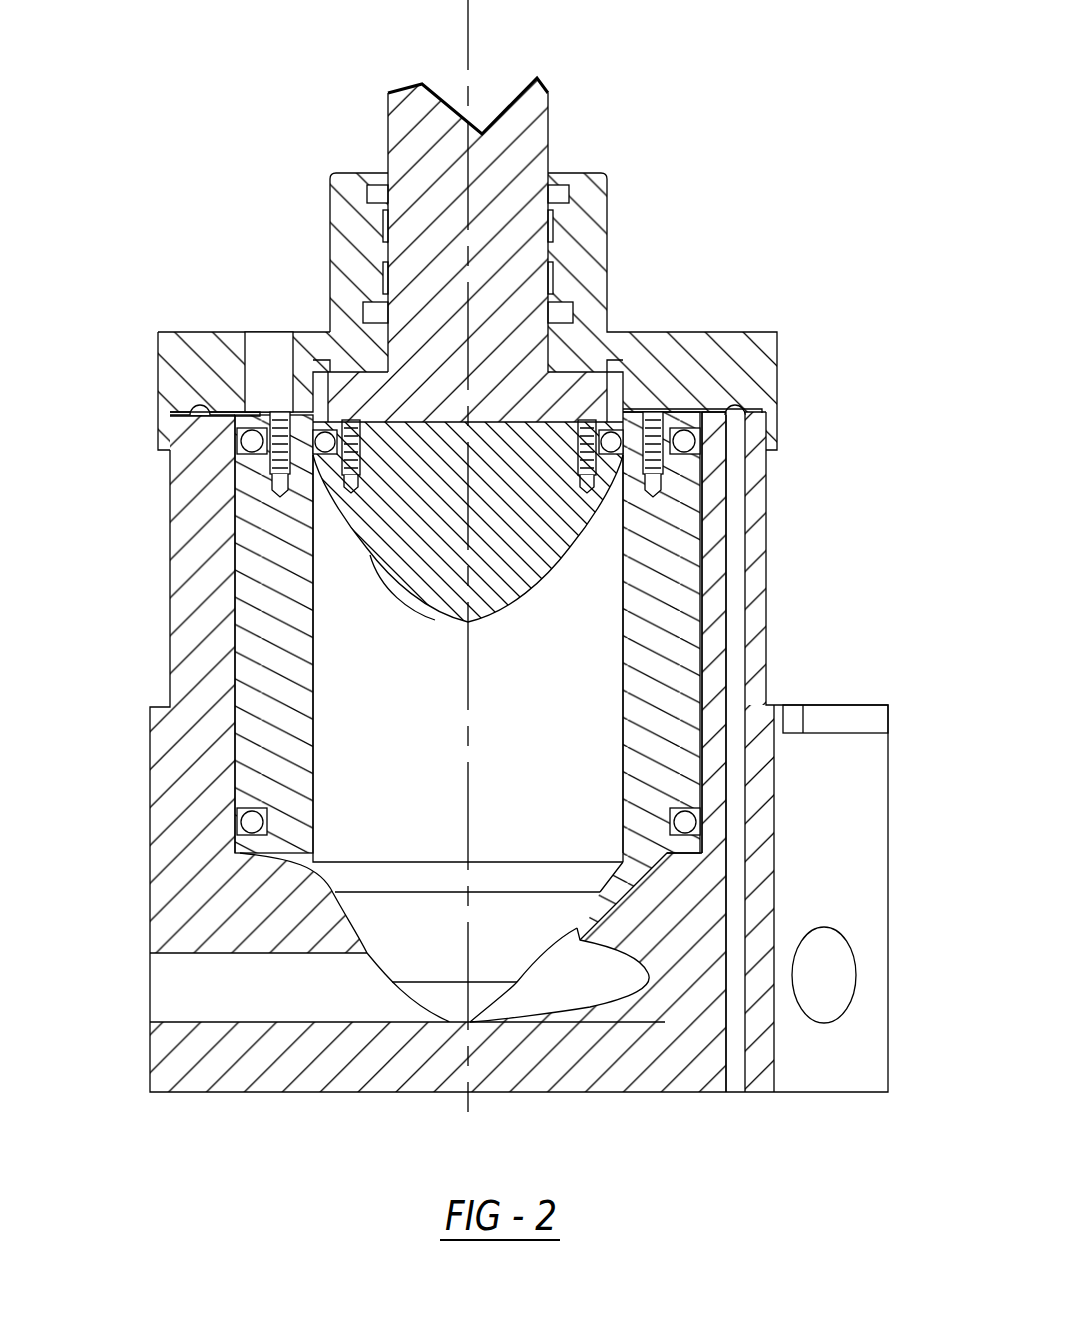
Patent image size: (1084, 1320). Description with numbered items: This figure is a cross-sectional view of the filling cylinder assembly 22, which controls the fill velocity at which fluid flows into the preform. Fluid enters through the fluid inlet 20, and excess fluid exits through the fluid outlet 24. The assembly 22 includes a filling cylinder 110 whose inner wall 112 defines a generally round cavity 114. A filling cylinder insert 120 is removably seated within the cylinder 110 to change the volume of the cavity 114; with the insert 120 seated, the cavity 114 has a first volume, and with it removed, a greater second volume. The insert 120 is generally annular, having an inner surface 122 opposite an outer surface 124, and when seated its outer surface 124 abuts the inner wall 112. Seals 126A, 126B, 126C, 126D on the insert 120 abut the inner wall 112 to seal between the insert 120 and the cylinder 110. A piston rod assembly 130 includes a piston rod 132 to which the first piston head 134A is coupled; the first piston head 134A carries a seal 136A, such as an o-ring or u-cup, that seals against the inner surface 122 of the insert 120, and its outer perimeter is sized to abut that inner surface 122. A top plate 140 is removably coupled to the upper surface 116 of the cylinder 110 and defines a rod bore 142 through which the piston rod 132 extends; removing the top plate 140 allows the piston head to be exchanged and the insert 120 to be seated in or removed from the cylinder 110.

The fluid inlet 20 is at (218, 1022).
The filling cylinder assembly 22 is at (212, 108).
The fluid outlet 24 is at (826, 1000).
The filling cylinder 110 is at (192, 487).
The inner wall 112 is at (250, 588).
The cavity 114 is at (372, 745).
The upper surface 116 is at (222, 412).
The filling cylinder insert 120 is at (683, 560).
The inner surface 122 is at (665, 616).
The outer surface 124 is at (690, 667).
The seal 126A is at (684, 442).
The seal 126B is at (686, 822).
The seal 126C is at (253, 442).
The seal 126D is at (252, 822).
The piston rod assembly 130 is at (525, 100).
The piston rod 132 is at (410, 102).
The first piston head 134A is at (512, 600).
The seal 136A is at (327, 450).
The top plate 140 is at (695, 338).
The rod bore 142 is at (556, 185).